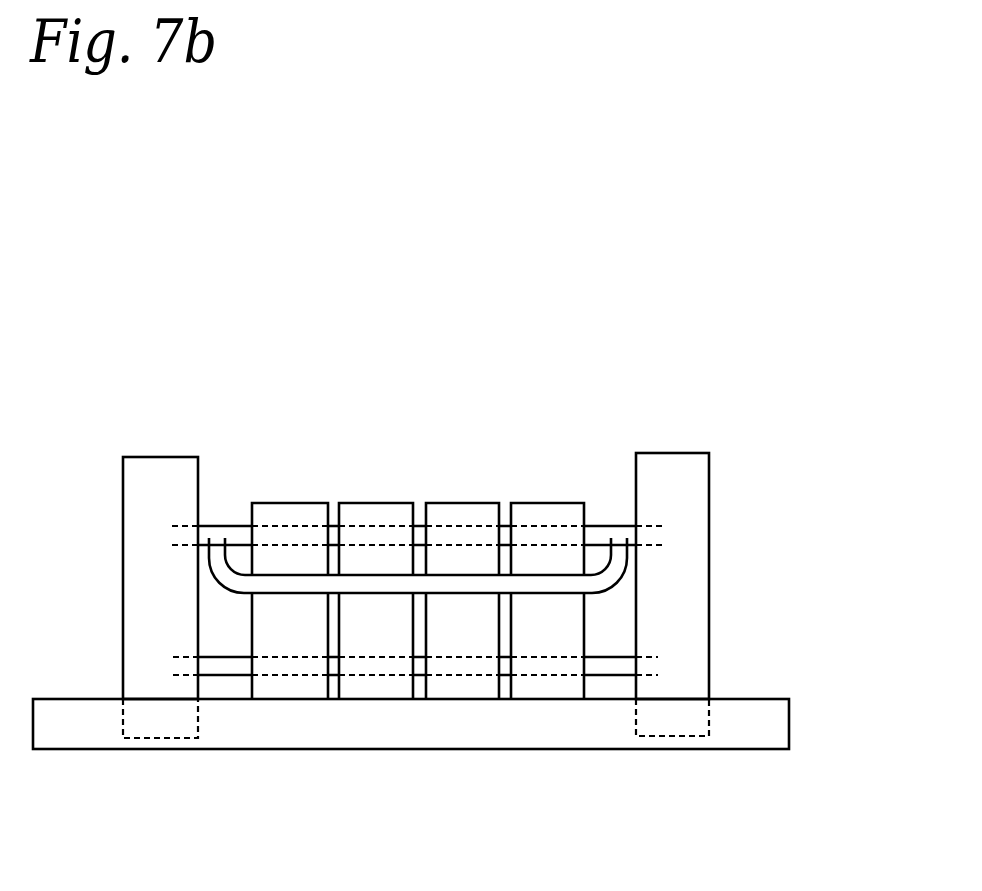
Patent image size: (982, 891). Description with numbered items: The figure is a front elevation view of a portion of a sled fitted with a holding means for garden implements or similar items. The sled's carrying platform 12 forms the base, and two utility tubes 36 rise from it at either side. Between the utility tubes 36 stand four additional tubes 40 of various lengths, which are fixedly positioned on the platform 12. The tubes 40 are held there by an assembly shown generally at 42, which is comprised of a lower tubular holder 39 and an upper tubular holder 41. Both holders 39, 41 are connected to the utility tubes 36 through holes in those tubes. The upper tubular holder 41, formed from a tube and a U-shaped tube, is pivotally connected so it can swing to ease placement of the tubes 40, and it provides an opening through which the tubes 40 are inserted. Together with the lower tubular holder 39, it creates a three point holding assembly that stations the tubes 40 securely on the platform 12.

The platform 12 is at (408, 742).
The utility tubes 36 is at (183, 614).
The tubes 40 is at (311, 644).
The tubular holder 41 is at (627, 533).
The tubular holder 39 is at (617, 665).
The securing means 42 is at (802, 583).